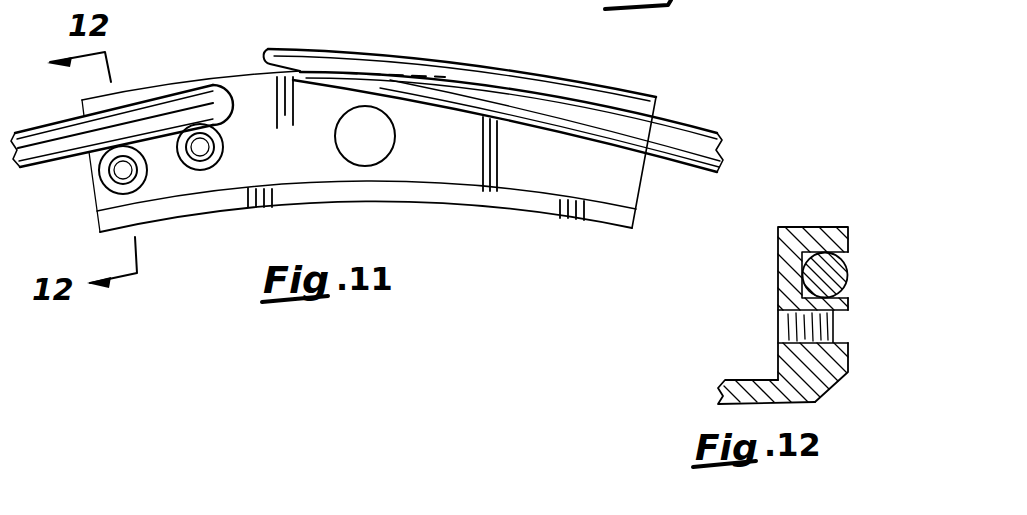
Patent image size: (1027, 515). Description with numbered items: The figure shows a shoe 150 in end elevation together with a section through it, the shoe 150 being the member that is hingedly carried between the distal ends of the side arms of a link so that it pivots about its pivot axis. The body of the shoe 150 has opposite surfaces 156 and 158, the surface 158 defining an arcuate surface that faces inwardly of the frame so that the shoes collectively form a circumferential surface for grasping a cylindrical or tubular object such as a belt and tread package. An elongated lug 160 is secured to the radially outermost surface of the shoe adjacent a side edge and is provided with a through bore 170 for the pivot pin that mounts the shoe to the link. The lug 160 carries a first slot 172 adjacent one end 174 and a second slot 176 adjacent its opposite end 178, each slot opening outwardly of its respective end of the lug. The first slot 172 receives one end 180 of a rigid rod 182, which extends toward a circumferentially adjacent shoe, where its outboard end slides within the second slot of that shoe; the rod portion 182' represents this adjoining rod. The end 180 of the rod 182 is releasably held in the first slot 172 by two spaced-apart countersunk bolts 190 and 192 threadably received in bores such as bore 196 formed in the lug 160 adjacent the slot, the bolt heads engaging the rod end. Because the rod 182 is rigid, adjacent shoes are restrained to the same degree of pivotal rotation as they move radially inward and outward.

In FIG. 11, the shoe 150 is at (522, 103).
In FIG. 11, the surface 156 is at (533, 76).
In FIG. 12, the surface 156 is at (740, 380).
In FIG. 11, the surface 158 is at (447, 206).
In FIG. 12, the surface 158 is at (850, 362).
In FIG. 11, the first elongated lug 160 is at (602, 88).
In FIG. 12, the first elongated lug 160 is at (797, 227).
In FIG. 11, the through bore 170 is at (395, 133).
In FIG. 11, the first slot 172 is at (168, 103).
In FIG. 12, the first slot 172 is at (843, 258).
In FIG. 11, the end of the lug 174 is at (88, 178).
In FIG. 11, the second slot 176 is at (553, 128).
In FIG. 11, the opposite end of the lug 178 is at (641, 187).
In FIG. 11, the end of the rod 180 is at (200, 100).
In FIG. 11, the rigid rod 182 is at (537, 122).
In FIG. 11, the rail section 182' is at (136, 113).
In FIG. 12, the rail section 182' is at (759, 296).
In FIG. 11, the countersunk bolt 190 is at (143, 183).
In FIG. 11, the countersunk bolt 192 is at (222, 147).
In FIG. 12, the bore 196 is at (841, 341).